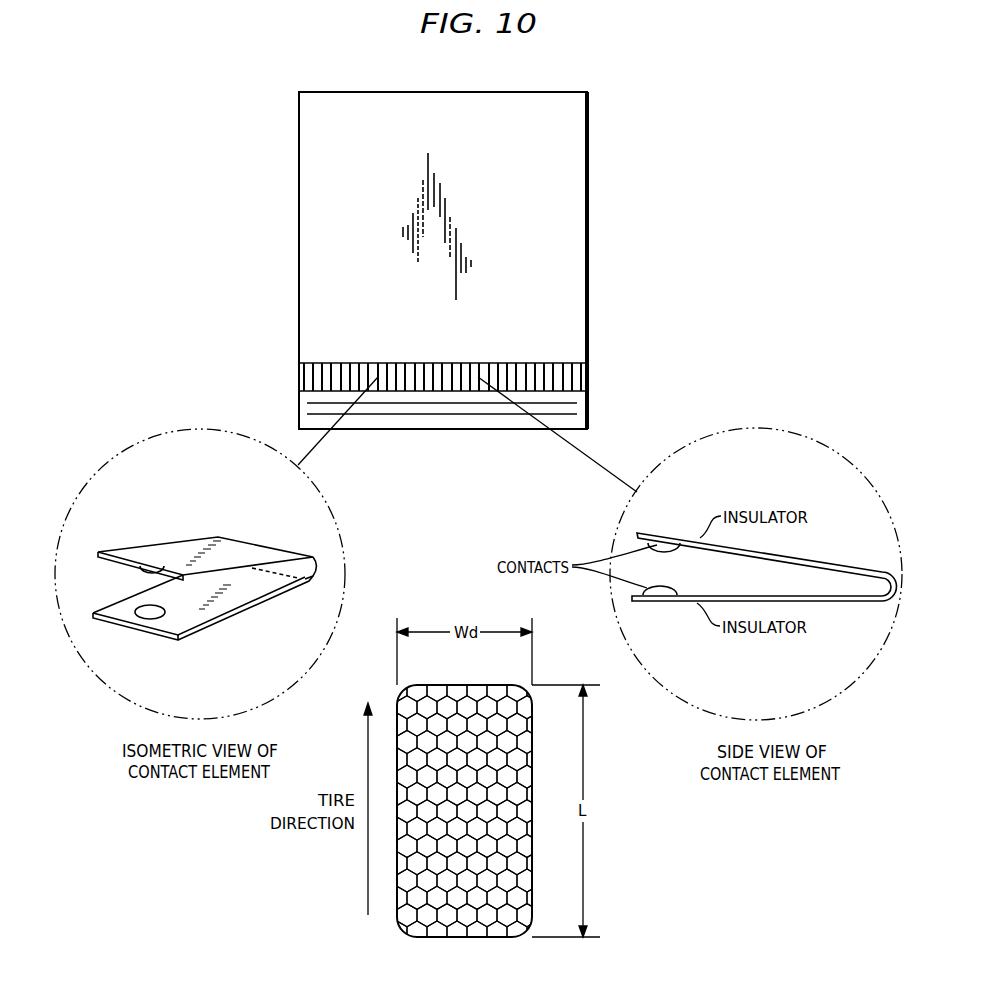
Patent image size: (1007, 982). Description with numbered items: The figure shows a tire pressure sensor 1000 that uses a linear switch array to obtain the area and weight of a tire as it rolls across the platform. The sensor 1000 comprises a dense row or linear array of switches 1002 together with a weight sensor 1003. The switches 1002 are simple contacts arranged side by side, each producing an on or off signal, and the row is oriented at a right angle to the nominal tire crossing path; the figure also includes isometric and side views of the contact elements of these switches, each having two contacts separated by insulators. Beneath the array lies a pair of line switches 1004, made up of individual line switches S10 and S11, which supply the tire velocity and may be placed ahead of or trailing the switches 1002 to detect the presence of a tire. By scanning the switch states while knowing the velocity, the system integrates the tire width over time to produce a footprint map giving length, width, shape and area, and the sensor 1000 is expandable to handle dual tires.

The tire pressure sensor 1000 is at (590, 113).
The weight sensor 1003 is at (573, 217).
The switches 1002 is at (588, 375).
The pair of line switches 1004 is at (454, 412).
The line switch S11 is at (313, 403).
The line switch S10 is at (325, 415).